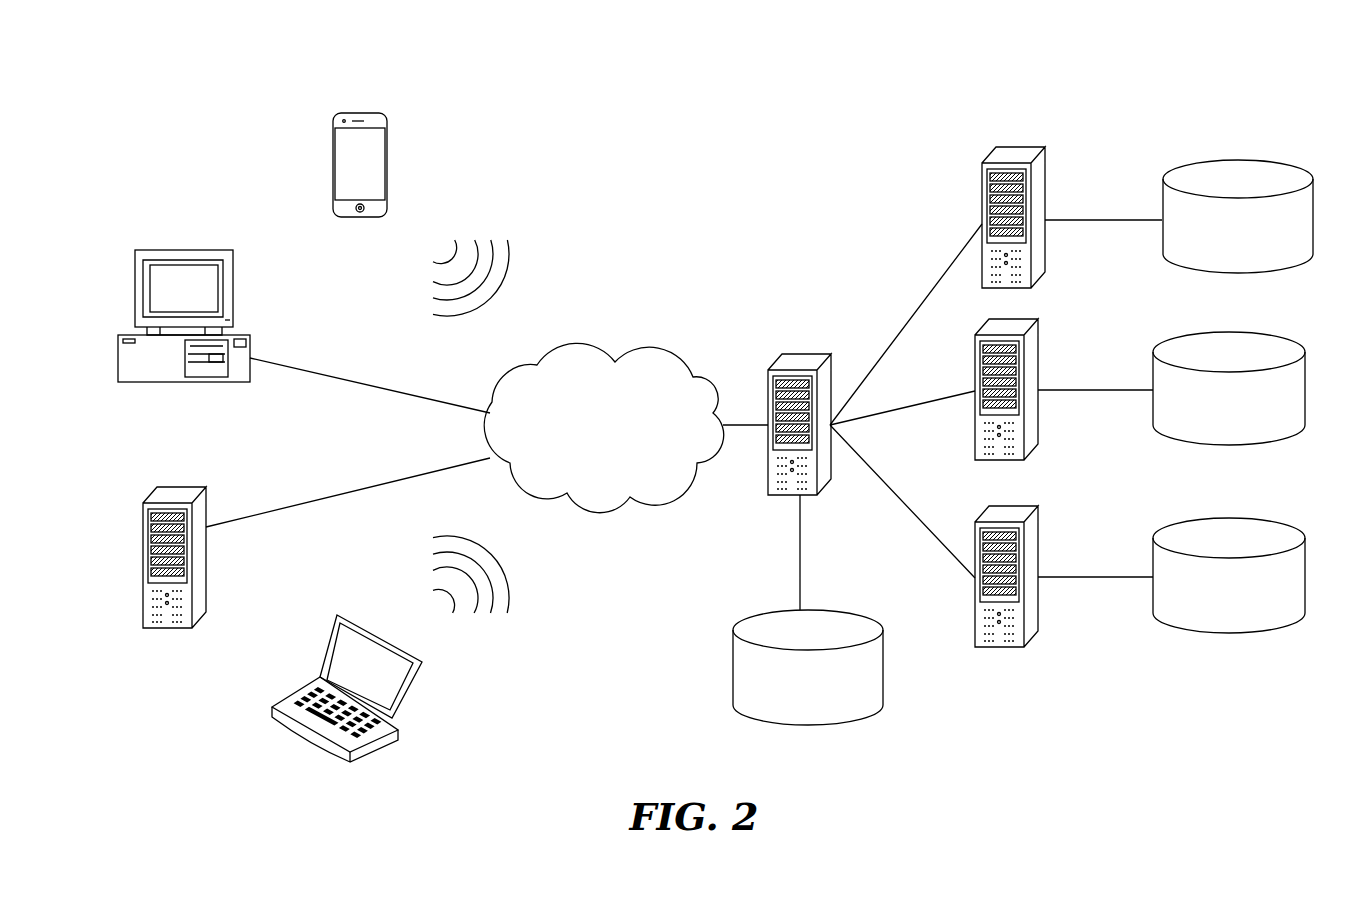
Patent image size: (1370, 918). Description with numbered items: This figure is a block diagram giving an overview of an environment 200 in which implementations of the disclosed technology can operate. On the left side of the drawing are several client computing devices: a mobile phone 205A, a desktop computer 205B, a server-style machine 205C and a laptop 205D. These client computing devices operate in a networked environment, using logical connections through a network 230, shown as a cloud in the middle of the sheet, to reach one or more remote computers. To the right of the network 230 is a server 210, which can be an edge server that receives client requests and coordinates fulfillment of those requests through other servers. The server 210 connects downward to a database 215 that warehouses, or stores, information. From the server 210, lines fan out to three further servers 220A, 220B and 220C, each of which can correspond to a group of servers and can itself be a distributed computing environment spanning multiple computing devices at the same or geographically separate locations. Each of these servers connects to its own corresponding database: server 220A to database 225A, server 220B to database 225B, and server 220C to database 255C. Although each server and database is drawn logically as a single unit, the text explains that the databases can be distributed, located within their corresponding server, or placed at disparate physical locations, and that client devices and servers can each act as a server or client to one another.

The environment 200 is at (807, 142).
The client computing device 205A is at (380, 111).
The client computing device 205B is at (228, 250).
The client computing device 205C is at (205, 490).
The client computing device 205D is at (418, 694).
The server 210 is at (810, 355).
The database 215 is at (860, 613).
The server 220A is at (1048, 148).
The server 220B is at (1040, 320).
The server 220C is at (1040, 508).
The database 225A is at (1238, 160).
The database 225B is at (1228, 332).
The database 255C is at (1227, 519).
The network 230 is at (662, 350).